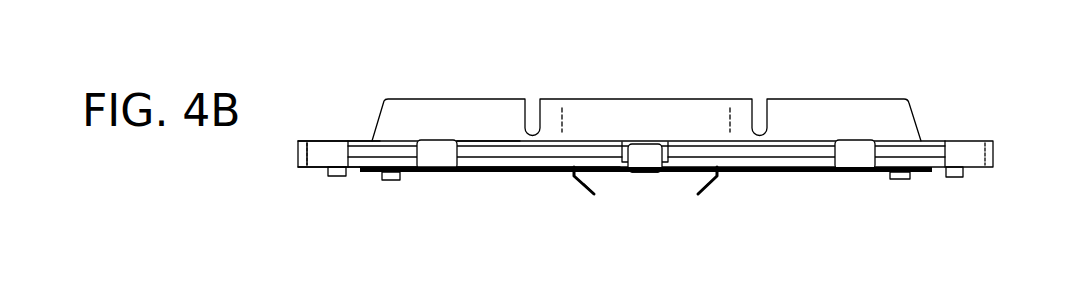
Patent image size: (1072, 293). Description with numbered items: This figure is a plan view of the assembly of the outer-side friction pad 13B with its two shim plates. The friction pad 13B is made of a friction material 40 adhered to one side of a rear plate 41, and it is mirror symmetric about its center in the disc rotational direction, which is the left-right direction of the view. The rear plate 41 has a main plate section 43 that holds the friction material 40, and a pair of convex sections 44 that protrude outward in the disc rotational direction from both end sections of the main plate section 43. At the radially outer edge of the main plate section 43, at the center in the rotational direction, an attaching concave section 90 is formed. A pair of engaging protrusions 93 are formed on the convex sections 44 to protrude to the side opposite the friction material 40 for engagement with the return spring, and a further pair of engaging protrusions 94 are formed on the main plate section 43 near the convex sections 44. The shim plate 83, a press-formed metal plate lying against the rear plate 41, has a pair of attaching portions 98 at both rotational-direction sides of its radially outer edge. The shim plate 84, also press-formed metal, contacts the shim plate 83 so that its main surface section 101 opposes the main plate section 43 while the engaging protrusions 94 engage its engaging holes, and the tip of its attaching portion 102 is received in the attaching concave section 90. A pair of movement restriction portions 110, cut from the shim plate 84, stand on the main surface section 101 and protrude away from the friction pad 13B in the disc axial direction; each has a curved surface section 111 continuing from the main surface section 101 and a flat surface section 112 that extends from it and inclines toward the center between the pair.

The friction pad 13B is at (998, 125).
The friction material 40 is at (387, 124).
The rear plate 41 is at (314, 139).
The main plate section 43 is at (598, 152).
The convex sections 44 is at (315, 154).
The shim plate 83 is at (443, 137).
The shim plate 84 is at (785, 173).
The attaching concave section 90 is at (625, 150).
The engaging protrusions 93 is at (338, 178).
The engaging protrusions 94 is at (392, 182).
The attaching portions 98 is at (430, 150).
The main surface section 101 is at (488, 173).
The attaching portion 102 is at (645, 162).
The movement restriction portions 110 is at (575, 192).
The curved surface section 111 is at (572, 175).
The flat surface section 112 is at (591, 191).